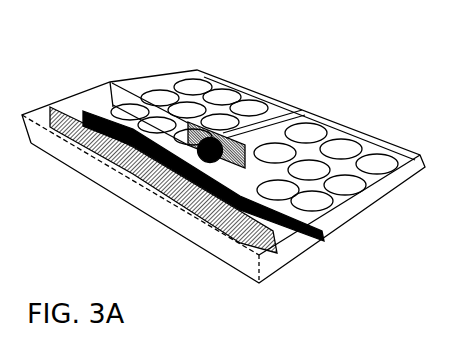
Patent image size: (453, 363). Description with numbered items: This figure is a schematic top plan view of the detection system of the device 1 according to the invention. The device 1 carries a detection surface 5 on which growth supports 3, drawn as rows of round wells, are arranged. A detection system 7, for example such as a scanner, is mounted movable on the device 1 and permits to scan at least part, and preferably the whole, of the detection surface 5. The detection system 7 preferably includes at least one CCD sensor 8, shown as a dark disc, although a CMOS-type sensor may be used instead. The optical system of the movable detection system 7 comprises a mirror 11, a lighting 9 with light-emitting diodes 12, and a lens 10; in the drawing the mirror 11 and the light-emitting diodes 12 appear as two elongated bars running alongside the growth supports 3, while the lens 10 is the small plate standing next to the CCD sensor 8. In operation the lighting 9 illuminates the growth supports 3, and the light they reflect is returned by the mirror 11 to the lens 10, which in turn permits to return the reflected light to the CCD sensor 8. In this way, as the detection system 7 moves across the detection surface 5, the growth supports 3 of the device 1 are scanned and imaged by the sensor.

The device 1 is at (401, 110).
The growth supports 3 is at (192, 82).
The detection surface 5 is at (248, 95).
The detection system 7 is at (261, 271).
The CCD sensor 8 is at (226, 165).
The lighting 9 is at (329, 241).
The lens 10 is at (222, 133).
The mirror 11 is at (133, 168).
The light-emitting diodes 12 is at (306, 241).